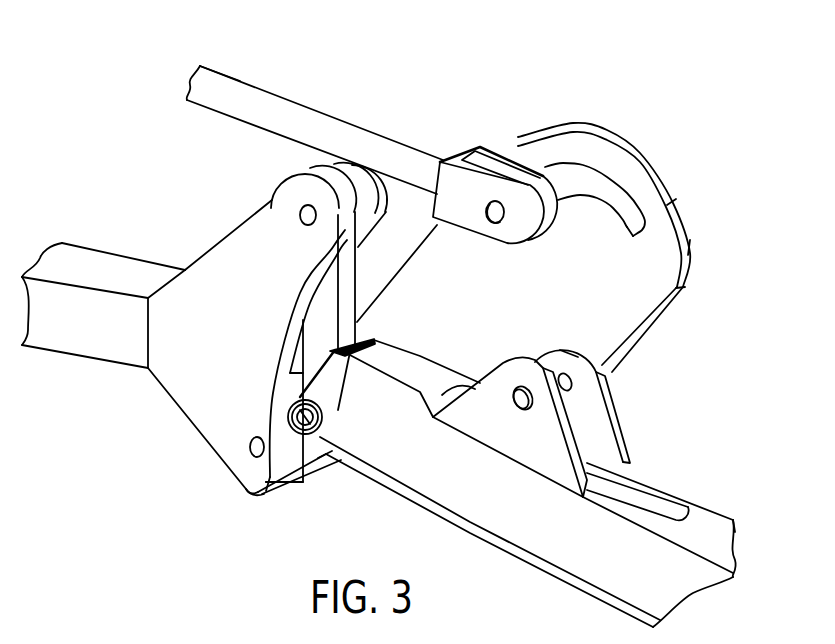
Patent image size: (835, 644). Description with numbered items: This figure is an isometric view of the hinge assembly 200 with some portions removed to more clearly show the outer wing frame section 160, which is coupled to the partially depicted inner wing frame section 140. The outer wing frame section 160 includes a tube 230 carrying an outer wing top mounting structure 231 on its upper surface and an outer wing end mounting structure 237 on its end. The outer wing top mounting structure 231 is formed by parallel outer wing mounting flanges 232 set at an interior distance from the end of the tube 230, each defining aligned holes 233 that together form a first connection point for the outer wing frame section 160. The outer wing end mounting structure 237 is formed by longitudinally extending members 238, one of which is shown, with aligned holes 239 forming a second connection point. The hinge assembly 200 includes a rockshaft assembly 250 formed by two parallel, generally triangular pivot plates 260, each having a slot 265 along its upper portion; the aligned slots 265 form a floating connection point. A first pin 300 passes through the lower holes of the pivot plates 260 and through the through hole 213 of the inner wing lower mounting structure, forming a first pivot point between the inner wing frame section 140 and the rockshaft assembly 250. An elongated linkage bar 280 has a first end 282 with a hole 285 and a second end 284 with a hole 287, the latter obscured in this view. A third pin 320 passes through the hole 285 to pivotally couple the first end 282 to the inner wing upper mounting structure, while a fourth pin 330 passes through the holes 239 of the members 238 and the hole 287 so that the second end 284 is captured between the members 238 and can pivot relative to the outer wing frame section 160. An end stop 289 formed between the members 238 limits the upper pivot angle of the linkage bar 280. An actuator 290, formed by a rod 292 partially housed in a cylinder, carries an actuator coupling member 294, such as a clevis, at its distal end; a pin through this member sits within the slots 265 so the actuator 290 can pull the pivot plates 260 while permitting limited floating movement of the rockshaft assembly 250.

The hinge assembly 200 is at (94, 129).
The inner wing frame section 140 is at (134, 238).
The outer wing frame section 160 is at (729, 491).
The actuator 290 is at (281, 61).
The rod 292 is at (315, 128).
The first end 282 is at (384, 207).
The actuator coupling member 294 is at (520, 163).
The slot 265 is at (587, 180).
The pivot plate 260 is at (622, 140).
The rockshaft assembly 250 is at (724, 222).
The hole 285 is at (272, 197).
The third pin 320 is at (300, 214).
The linkage bar 280 is at (350, 287).
The end stop 289 is at (372, 340).
The second end 284 is at (303, 380).
The first pin 300 is at (249, 454).
The through hole 213 is at (253, 494).
The hole 239 is at (283, 480).
The longitudinally extending member 238 is at (326, 461).
The outer wing end mounting structure 237 is at (337, 462).
The fourth pin 330 is at (316, 406).
The hole 287 is at (322, 418).
The hole 233 is at (580, 376).
The outer wing mounting flange 232 is at (607, 410).
The outer wing top mounting structure 231 is at (630, 424).
The tube 230 is at (710, 530).